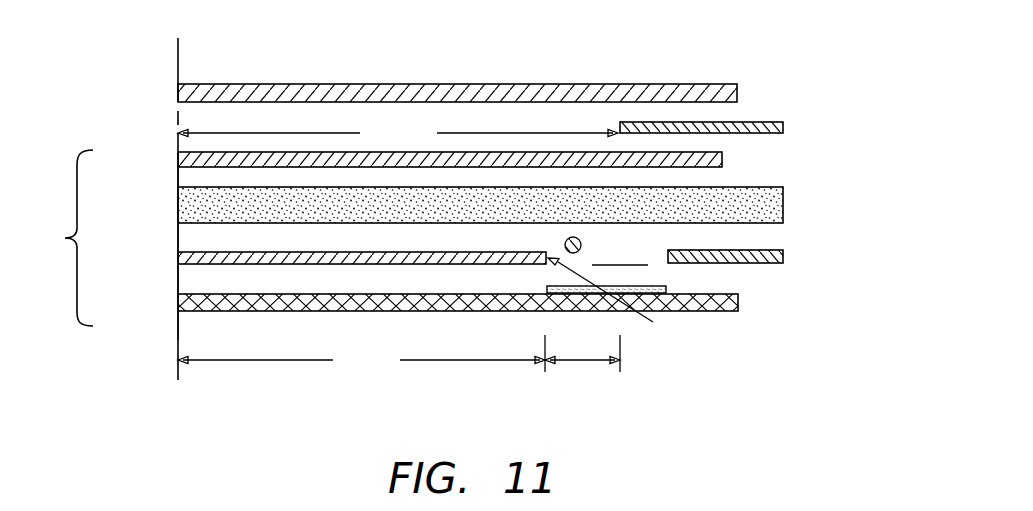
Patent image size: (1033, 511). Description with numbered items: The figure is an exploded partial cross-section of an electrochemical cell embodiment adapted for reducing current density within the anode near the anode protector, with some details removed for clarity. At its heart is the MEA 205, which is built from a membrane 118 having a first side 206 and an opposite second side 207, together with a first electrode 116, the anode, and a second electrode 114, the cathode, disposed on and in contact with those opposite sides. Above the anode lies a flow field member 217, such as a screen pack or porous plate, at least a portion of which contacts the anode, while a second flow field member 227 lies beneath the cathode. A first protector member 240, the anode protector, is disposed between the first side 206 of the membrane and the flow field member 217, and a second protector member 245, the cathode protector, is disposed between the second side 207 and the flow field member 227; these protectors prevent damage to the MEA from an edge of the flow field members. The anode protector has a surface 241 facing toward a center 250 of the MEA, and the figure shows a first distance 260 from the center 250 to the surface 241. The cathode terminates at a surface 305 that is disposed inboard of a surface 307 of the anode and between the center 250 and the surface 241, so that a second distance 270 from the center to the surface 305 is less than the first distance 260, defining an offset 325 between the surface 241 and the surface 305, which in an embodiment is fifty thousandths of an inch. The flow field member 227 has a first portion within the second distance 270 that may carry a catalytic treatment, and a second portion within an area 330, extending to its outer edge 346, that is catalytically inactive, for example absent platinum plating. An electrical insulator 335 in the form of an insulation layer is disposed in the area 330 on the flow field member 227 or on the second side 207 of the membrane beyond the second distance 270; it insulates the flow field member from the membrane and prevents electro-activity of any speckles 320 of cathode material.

The center of the MEA 250 is at (178, 52).
The flow field member 217 is at (310, 84).
The first protector member 240 is at (765, 121).
The surface 241 is at (618, 126).
The first distance 260 is at (398, 133).
The surface of the anode 307 is at (723, 158).
The first side 206 is at (773, 186).
The second side 207 is at (773, 225).
The second protector member 245 is at (770, 264).
The speckles 320 is at (564, 243).
The area 330 is at (620, 247).
The electrical insulator 335 is at (654, 287).
The outer edge 346 is at (738, 303).
The surface of the cathode 305 is at (619, 308).
The second distance 270 is at (361, 355).
The offset 325 is at (580, 362).
The first electrode 116 is at (195, 167).
The membrane 118 is at (203, 224).
The second electrode 114 is at (197, 264).
The flow field member 227 is at (197, 312).
The MEA 205 is at (50, 238).